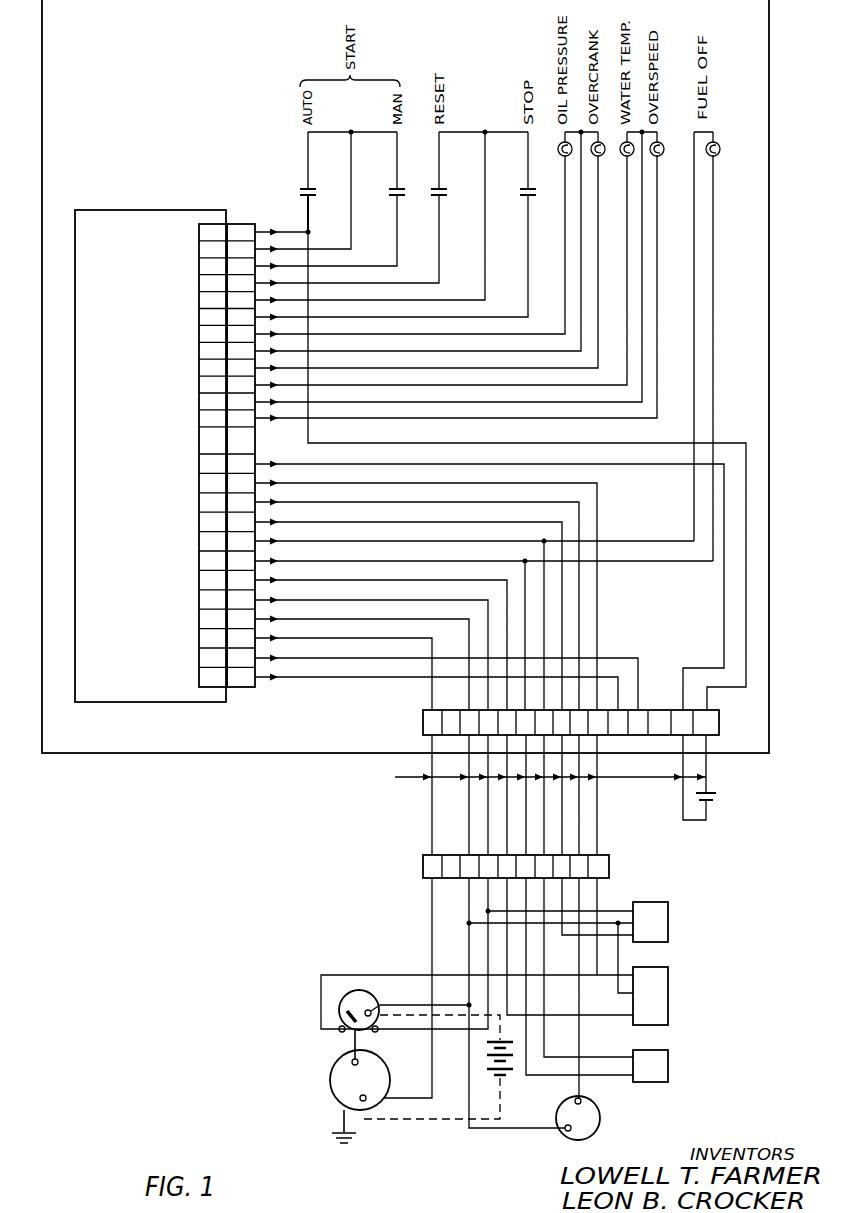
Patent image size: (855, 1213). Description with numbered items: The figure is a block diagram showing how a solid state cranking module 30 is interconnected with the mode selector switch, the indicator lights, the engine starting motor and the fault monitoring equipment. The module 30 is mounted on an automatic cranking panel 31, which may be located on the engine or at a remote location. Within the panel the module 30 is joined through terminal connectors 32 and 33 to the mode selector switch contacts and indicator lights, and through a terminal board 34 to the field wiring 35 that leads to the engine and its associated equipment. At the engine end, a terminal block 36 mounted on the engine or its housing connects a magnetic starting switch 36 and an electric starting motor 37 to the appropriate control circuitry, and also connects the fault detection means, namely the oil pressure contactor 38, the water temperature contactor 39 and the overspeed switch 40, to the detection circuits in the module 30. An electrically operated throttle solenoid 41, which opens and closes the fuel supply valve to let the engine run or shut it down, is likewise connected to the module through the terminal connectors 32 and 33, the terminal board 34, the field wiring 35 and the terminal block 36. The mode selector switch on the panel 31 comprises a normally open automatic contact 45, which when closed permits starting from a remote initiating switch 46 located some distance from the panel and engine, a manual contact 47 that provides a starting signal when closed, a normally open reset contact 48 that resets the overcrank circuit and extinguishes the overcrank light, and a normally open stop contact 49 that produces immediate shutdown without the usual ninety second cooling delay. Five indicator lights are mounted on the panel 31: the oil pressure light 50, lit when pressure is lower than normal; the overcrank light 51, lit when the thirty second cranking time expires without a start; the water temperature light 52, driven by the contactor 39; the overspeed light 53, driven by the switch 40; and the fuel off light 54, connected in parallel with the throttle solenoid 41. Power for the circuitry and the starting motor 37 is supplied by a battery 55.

The solid state cranking module 30 is at (126, 213).
The panel 31 is at (47, 70).
The terminal connector 32 is at (199, 236).
The terminal connector 33 is at (243, 222).
The terminal board 34 is at (425, 722).
The field wiring 35 is at (410, 780).
The terminal block 36 is at (423, 853).
The electric starting motor 37 is at (343, 1093).
The oil pressure contactor 38 is at (665, 900).
The water temperature contactor 39 is at (665, 970).
The overspeed switch 40 is at (564, 1110).
The throttle solenoid 41 is at (665, 1057).
The automatic contact 45 is at (310, 188).
The remote initiating switch 46 is at (697, 799).
The manual contact 47 is at (395, 188).
The reset contact 48 is at (442, 190).
The stop contact 49 is at (523, 190).
The oil pressure indicator light 50 is at (562, 153).
The overcrank light 51 is at (597, 152).
The water temperature indicator light 52 is at (630, 155).
The overspeed indicator light 53 is at (672, 135).
The fuel off indicator light 54 is at (718, 155).
The battery 55 is at (487, 1058).